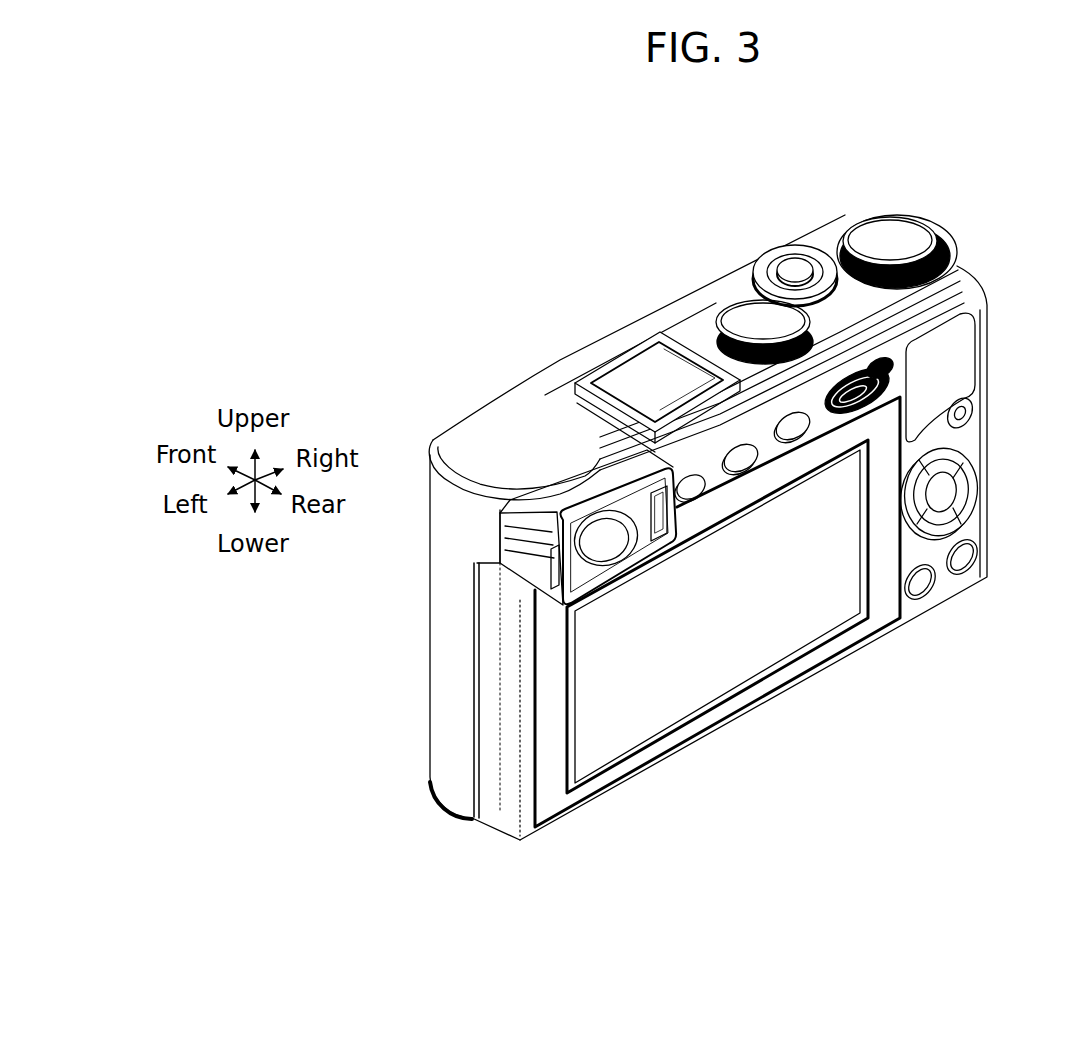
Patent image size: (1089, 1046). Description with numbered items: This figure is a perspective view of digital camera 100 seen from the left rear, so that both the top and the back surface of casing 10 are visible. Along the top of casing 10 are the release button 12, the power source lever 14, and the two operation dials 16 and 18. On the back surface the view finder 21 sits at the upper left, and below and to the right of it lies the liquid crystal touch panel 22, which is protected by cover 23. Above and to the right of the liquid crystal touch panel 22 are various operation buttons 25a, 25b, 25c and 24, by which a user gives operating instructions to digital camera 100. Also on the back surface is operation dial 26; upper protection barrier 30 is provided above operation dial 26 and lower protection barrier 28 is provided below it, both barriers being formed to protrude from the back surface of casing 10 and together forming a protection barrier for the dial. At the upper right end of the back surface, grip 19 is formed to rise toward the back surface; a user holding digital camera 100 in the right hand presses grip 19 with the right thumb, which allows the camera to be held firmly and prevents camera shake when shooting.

The digital camera 100 is at (427, 210).
The casing 10 is at (506, 804).
The release button 12 is at (793, 268).
The power source lever 14 is at (770, 262).
The operation dial 16 is at (918, 238).
The operation dial 18 is at (752, 320).
The grip 19 is at (988, 322).
The view finder 21 is at (607, 537).
The liquid crystal touch panel 22 is at (633, 757).
The cover 23 is at (584, 806).
The operation button 24 is at (958, 506).
The operation button 25a is at (690, 497).
The operation button 25b is at (745, 468).
The operation button 25c is at (797, 436).
The operation dial 26 is at (882, 378).
The lower protection barrier 28 is at (860, 413).
The upper protection barrier 30 is at (877, 356).